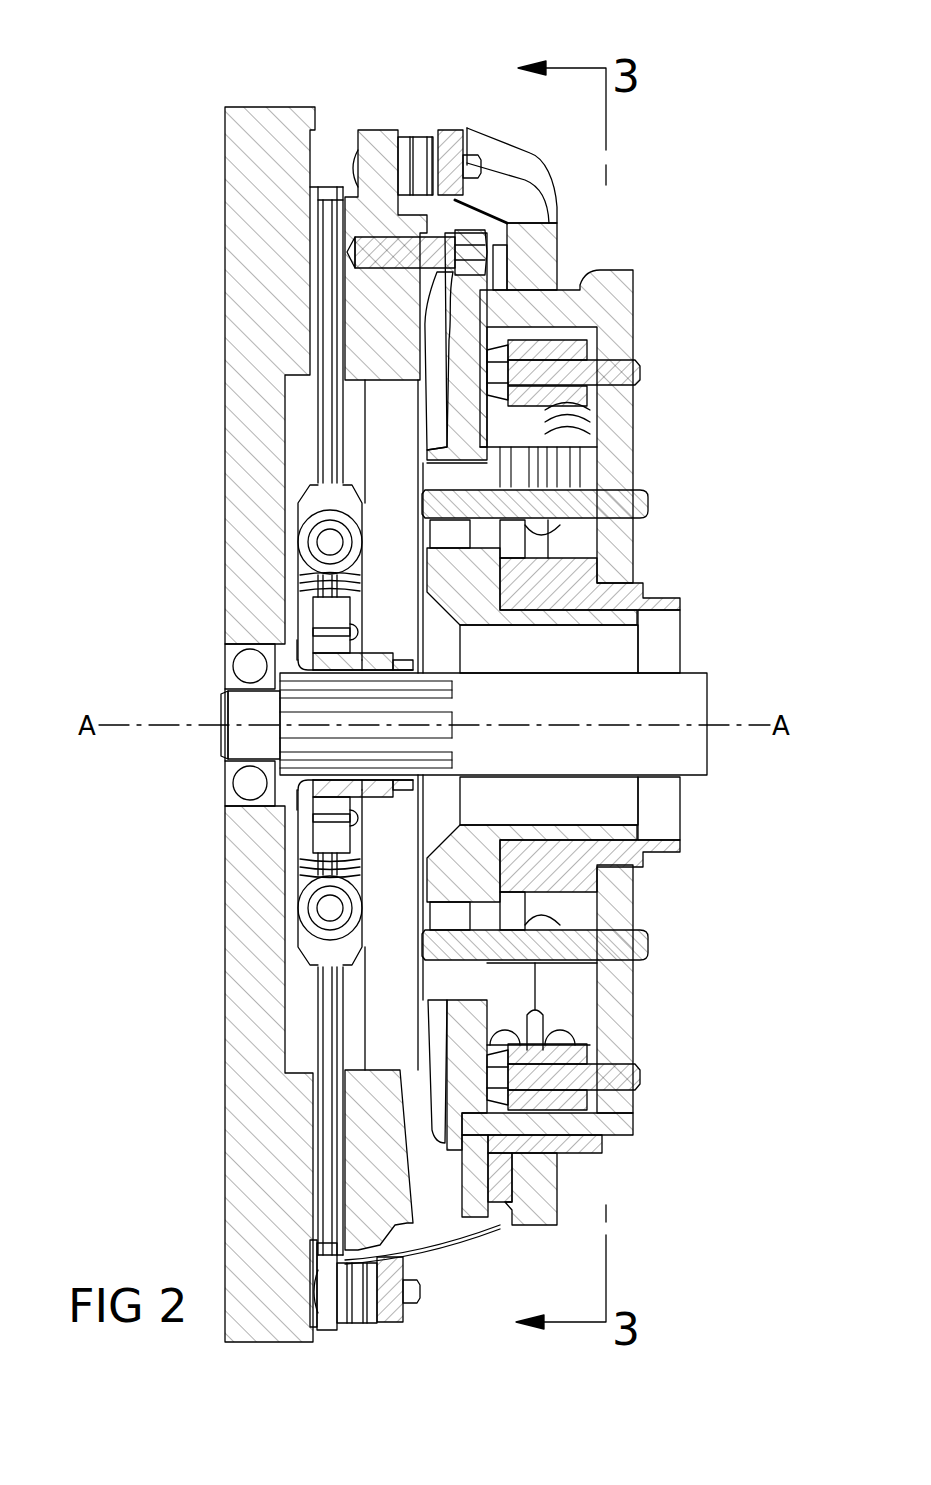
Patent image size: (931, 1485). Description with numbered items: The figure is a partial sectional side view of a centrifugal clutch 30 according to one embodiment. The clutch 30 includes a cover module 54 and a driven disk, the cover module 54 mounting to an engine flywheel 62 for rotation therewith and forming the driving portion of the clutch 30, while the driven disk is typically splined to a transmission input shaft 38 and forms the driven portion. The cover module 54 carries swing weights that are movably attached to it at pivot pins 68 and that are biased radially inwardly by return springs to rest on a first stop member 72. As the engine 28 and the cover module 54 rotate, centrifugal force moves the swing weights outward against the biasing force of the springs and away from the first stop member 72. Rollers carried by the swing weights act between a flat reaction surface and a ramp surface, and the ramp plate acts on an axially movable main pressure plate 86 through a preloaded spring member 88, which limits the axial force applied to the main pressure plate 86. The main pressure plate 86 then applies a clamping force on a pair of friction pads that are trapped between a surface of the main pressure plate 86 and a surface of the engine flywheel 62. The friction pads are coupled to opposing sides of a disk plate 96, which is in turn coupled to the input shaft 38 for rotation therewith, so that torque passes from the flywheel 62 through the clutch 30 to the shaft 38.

The engine 28 is at (463, 1105).
The clutch 30 is at (665, 217).
The transmission input shaft 38 is at (693, 683).
The cover module 54 is at (610, 292).
The engine flywheel 62 is at (244, 278).
The pivot pins 68 is at (630, 375).
The first stop member 72 is at (650, 508).
The main pressure plate 86 is at (385, 140).
The preloaded spring member 88 is at (462, 1105).
The disk plate 96 is at (329, 195).